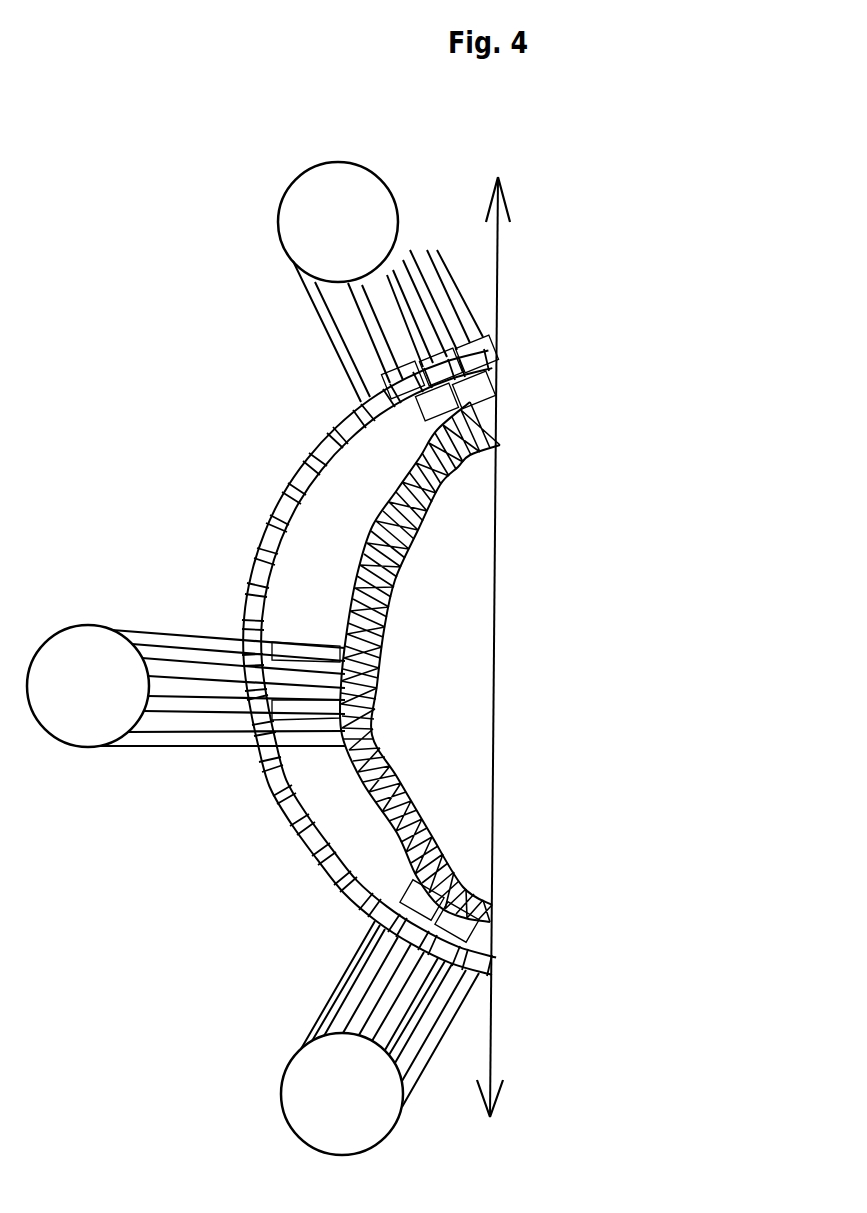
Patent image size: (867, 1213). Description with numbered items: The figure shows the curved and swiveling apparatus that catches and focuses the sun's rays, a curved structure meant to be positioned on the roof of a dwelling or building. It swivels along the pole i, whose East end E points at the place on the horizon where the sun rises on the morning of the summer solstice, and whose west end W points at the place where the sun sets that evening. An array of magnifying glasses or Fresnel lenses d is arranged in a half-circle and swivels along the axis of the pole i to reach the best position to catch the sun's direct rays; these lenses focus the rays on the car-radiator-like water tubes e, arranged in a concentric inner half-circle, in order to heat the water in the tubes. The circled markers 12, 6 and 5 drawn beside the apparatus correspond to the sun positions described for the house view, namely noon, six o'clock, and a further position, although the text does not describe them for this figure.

The first cable bundle 5 is at (380, 1017).
The second cable bundle 6 is at (388, 291).
The third cable bundle 12 is at (186, 686).
The array of magnifying glasses or Fresnel lenses d is at (240, 630).
The car-radiator-like water tubes e is at (383, 660).
The pole i is at (505, 747).
The East end E is at (496, 132).
The west end W is at (488, 1146).